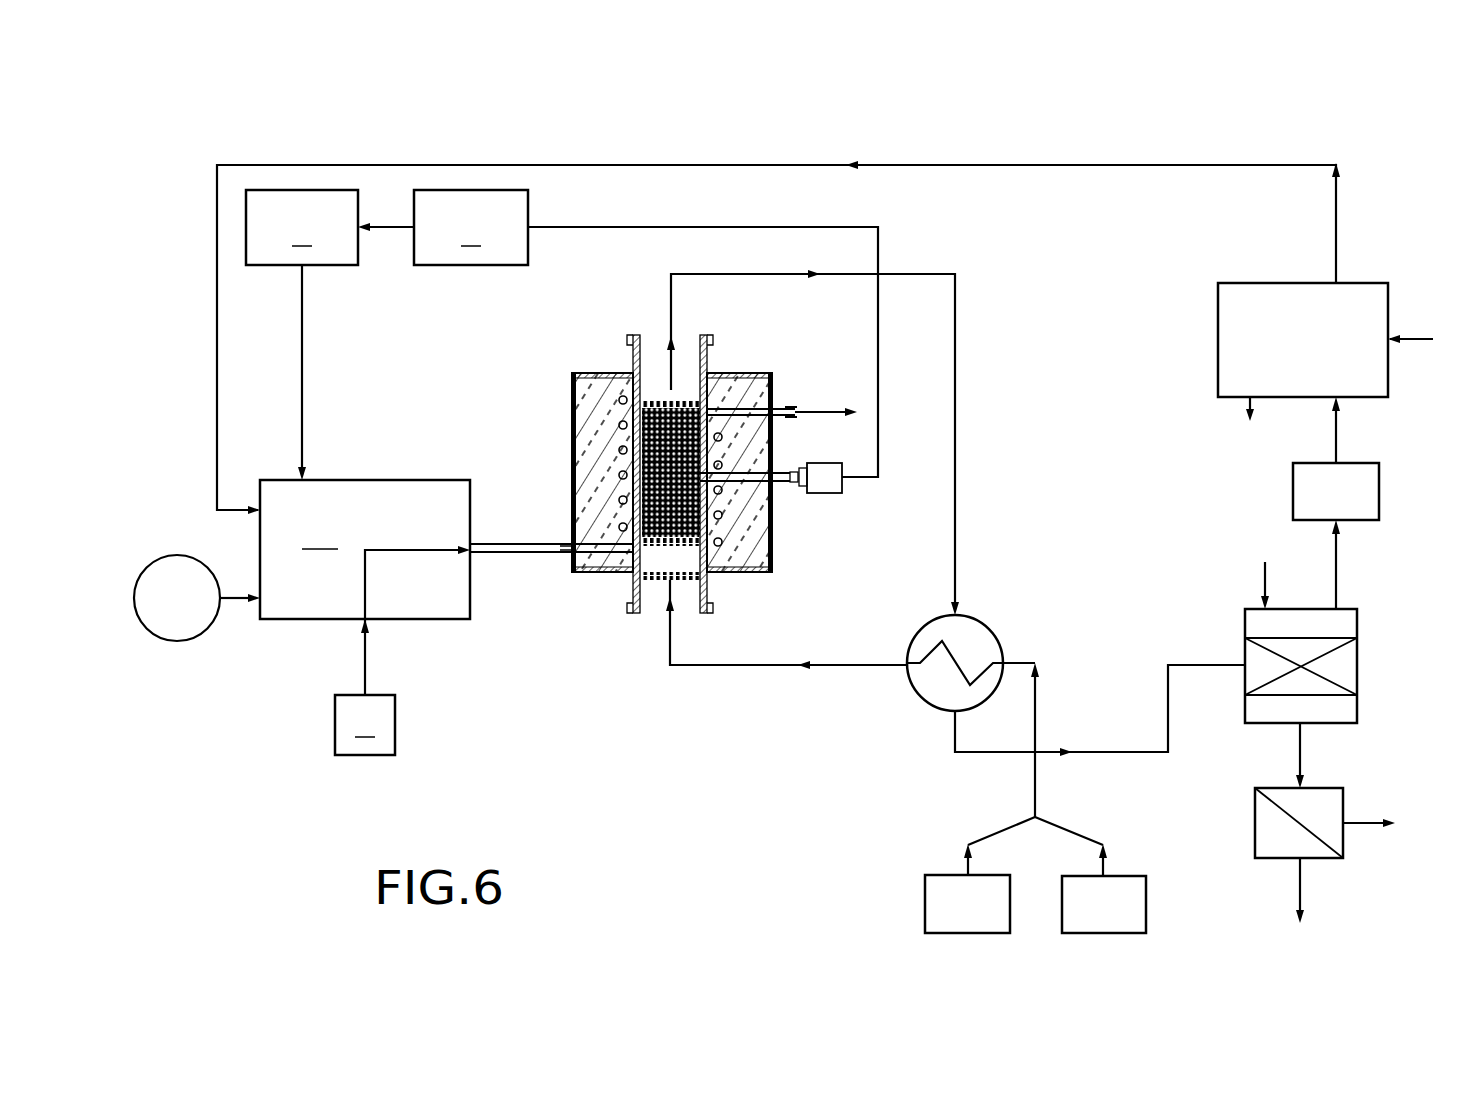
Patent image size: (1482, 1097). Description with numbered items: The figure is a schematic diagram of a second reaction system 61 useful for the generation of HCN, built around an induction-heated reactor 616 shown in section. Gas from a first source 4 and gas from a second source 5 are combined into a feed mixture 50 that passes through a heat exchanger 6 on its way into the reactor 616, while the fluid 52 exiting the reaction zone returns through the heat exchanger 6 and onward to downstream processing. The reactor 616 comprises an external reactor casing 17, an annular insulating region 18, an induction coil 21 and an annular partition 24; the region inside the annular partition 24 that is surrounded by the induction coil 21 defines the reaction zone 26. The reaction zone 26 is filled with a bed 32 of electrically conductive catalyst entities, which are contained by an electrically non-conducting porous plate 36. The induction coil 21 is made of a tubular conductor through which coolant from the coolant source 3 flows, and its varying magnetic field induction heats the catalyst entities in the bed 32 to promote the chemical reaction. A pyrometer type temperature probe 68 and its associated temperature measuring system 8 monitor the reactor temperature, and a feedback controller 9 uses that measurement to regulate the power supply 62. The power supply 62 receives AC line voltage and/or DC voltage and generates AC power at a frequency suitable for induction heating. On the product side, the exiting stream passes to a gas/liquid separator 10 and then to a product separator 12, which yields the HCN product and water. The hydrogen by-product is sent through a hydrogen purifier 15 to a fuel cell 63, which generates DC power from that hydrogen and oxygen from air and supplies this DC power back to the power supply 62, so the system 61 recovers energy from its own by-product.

The second reaction system 61 is at (1374, 136).
The fuel cell 63 is at (1355, 283).
The hydrogen purifier 15 is at (1380, 490).
The gas/liquid separator 10 is at (1338, 725).
The product separator 12 is at (1336, 788).
The heat exchanger 6 is at (925, 708).
The fluid exiting reaction zone 52 is at (913, 275).
The feed gas mixture 50 is at (670, 640).
The first source 4 is at (937, 875).
The second source 5 is at (1128, 876).
The feedback controller 9 is at (302, 335).
The temperature measuring system 8 is at (618, 333).
The power supply 62 is at (302, 560).
The coolant source 3 is at (365, 687).
The reactor 616 is at (510, 338).
The annular partition 24 is at (612, 372).
The external reactor casing 17 is at (743, 373).
The annular insulating region 18 is at (743, 557).
The bed of electrically conductive catalyst entities 32 is at (636, 417).
The electrically non-conducting porous plate 36 is at (655, 397).
The reaction zone 26 is at (557, 392).
The induction coil 21 is at (723, 438).
The pyrometer type temperature probe 68 is at (788, 497).